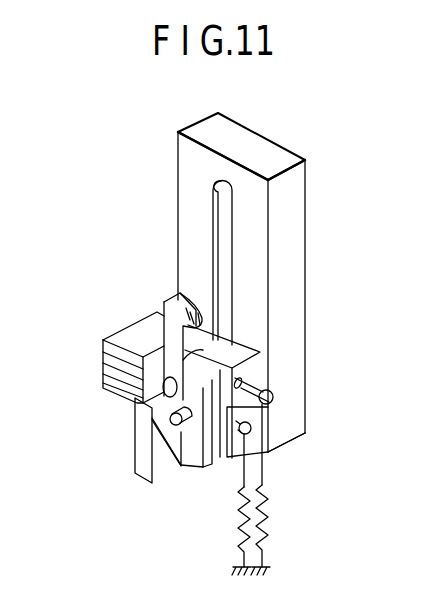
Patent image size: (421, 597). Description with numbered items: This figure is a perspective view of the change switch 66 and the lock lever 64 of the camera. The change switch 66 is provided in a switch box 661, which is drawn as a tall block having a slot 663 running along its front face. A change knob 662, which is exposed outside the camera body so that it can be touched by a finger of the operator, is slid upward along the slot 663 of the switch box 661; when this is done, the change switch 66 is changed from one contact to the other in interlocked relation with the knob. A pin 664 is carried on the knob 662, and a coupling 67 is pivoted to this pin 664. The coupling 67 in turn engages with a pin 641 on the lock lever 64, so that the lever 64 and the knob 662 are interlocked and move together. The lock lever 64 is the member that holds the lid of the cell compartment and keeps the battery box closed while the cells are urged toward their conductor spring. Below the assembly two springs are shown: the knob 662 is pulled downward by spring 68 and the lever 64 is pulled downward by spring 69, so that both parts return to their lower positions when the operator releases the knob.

The lock lever 64 is at (142, 445).
The pin 641 is at (150, 452).
The change switch 66 is at (175, 213).
The switch box 661 is at (297, 217).
The change knob 662 is at (132, 330).
The slot 663 is at (227, 285).
The pin 664 is at (162, 414).
The coupling 67 is at (152, 318).
The spring 68 is at (264, 504).
The spring 69 is at (240, 520).